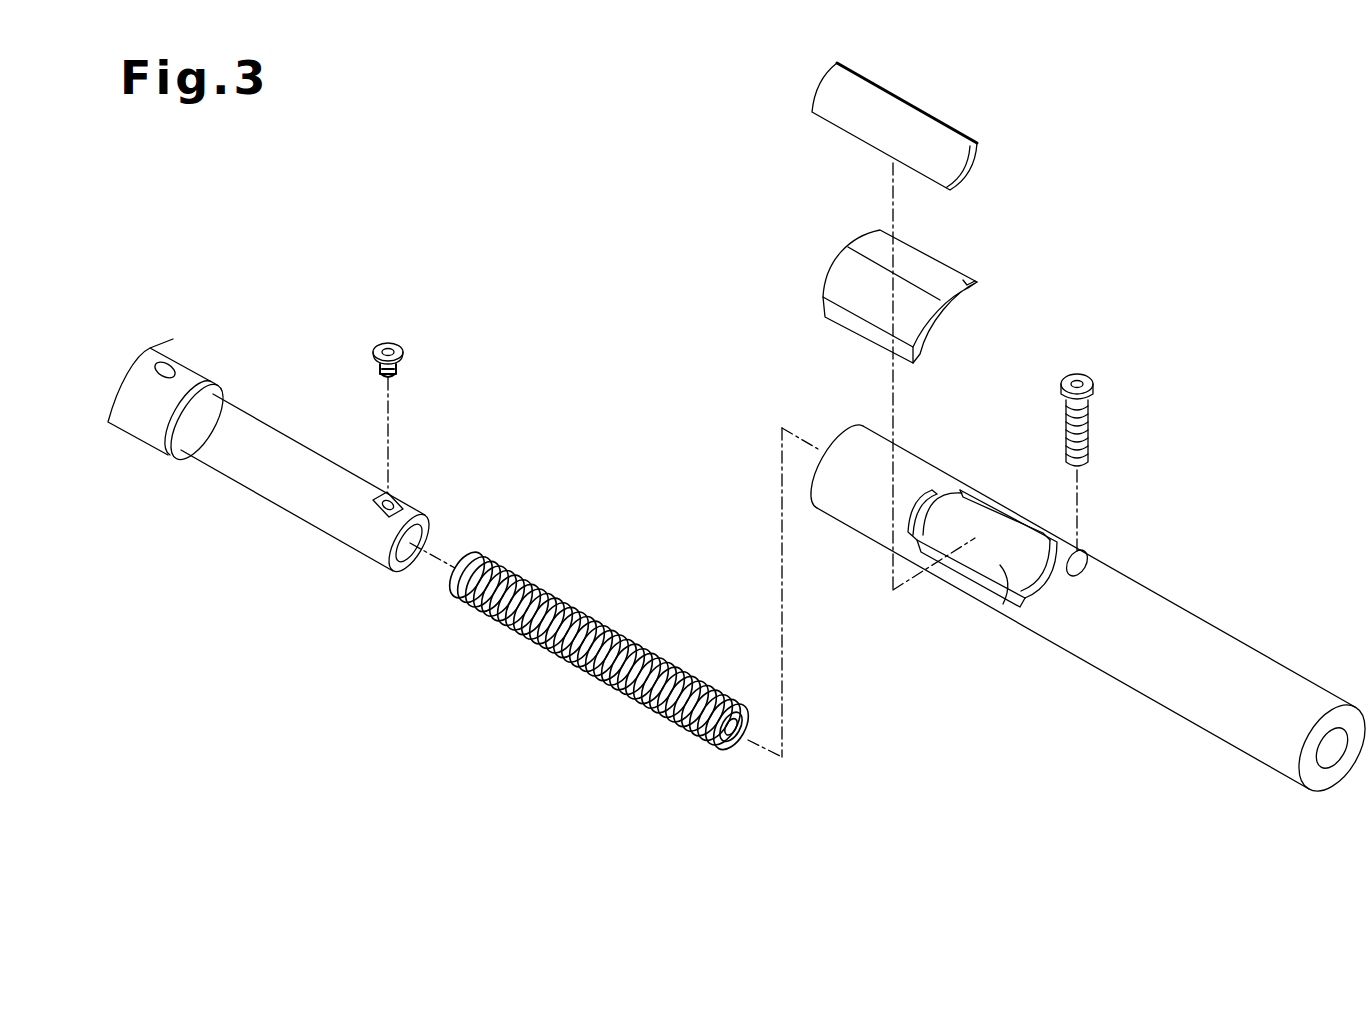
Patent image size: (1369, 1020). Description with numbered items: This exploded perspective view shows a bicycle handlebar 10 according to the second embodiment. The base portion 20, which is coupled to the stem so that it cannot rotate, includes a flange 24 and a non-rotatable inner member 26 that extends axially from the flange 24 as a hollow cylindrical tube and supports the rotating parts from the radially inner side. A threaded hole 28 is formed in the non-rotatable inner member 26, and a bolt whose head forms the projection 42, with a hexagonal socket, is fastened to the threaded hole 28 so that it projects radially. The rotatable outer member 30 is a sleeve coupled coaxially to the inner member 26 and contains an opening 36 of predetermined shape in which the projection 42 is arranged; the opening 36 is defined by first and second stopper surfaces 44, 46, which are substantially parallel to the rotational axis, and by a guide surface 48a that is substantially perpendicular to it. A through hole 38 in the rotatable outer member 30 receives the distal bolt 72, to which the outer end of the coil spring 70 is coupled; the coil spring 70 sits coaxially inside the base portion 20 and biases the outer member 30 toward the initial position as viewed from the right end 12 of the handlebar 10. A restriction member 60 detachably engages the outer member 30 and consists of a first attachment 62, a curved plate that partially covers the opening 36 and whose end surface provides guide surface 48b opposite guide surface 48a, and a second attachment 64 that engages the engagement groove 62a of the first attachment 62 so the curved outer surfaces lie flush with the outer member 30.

The handlebar 10 is at (370, 217).
The right end 12 is at (1352, 718).
The base portion 20 is at (283, 580).
The flange 24 is at (182, 458).
The non-rotatable inner member 26 is at (280, 493).
The threaded hole 28 is at (390, 499).
The rotatable outer member 30 is at (1175, 690).
The opening 36 is at (975, 536).
The through hole 38 is at (1082, 562).
The projection 42 is at (402, 352).
The first stopper surface 44 is at (1040, 533).
The second stopper surface 46 is at (1003, 573).
The guide surface 48a is at (1018, 577).
The guide surface 48b is at (955, 290).
The restriction member 60 is at (757, 73).
The first attachment 62 is at (870, 243).
The engagement groove 62a is at (898, 306).
The second attachment 64 is at (818, 80).
The coil spring 70 is at (550, 650).
The distal bolt 72 is at (1097, 386).